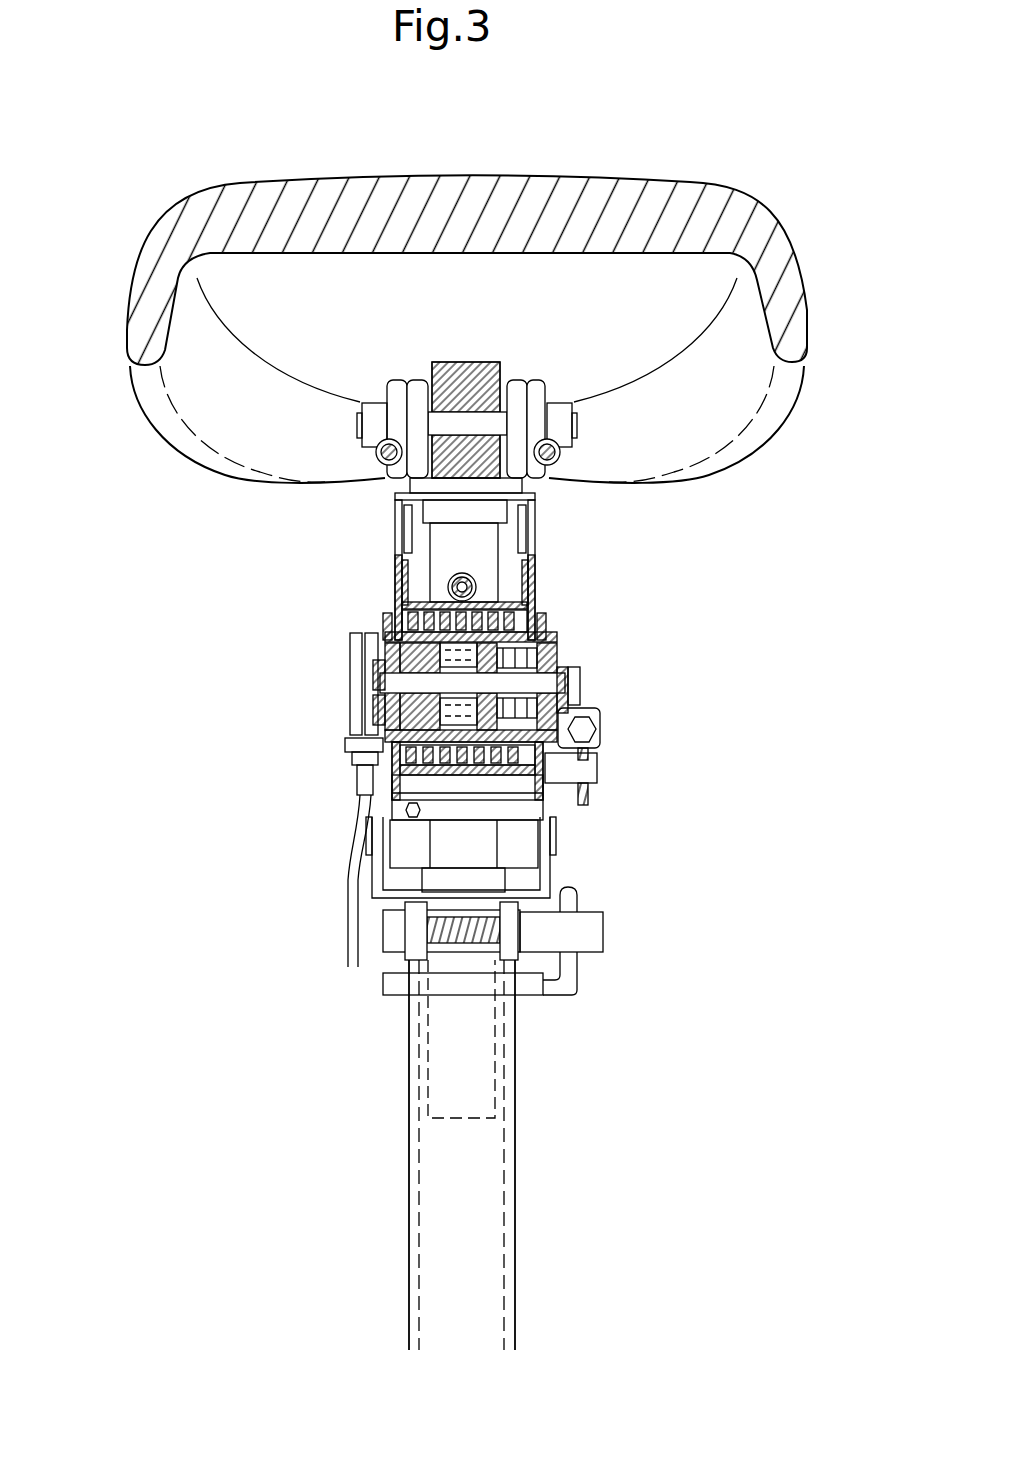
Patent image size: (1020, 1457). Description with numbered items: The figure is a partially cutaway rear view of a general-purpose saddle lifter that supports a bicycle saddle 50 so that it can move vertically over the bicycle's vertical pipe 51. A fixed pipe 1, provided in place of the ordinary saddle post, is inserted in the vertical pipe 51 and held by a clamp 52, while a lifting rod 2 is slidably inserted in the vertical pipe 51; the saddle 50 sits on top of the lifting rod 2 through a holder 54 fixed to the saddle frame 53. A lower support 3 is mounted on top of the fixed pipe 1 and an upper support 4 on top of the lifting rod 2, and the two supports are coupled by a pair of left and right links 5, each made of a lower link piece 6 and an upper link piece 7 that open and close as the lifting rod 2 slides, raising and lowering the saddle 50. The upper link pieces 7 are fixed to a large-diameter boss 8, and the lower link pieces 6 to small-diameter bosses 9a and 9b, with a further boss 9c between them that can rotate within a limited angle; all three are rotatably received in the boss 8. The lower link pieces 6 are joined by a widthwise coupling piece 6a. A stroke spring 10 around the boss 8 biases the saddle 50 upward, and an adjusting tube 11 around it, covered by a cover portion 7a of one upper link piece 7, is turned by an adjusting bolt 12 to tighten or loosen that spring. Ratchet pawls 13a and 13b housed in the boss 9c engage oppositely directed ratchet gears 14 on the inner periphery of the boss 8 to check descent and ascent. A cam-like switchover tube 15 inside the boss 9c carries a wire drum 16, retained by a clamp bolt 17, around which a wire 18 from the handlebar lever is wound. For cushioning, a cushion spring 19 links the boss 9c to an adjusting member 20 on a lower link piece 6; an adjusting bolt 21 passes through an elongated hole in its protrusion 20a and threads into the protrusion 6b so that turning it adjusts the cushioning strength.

The fixed pipe 1 is at (468, 1188).
The lifting rod 2 is at (445, 540).
The lower support 3 is at (553, 870).
The upper support 4 is at (530, 503).
The link 5 is at (378, 622).
The lower link piece 6 is at (387, 807).
The coupling piece 6a is at (455, 810).
The protrusion 6b is at (593, 777).
The upper link piece 7 is at (398, 582).
The cover portion 7a is at (478, 808).
The large-diameter boss 8 is at (537, 627).
The small-diameter boss 9a is at (362, 733).
The small-diameter boss 9b is at (563, 643).
The small-diameter boss 9c is at (367, 682).
The stroke spring 10 is at (517, 605).
The adjusting tube 11 is at (405, 603).
The adjusting bolt 12 is at (452, 580).
The ratchet pawl 13a is at (352, 648).
The ratchet pawl 13b is at (362, 748).
The ratchet gear 14 is at (380, 763).
The switchover tube 15 is at (362, 707).
The wire drum 16 is at (355, 717).
The clamp bolt 17 is at (573, 680).
The wire 18 is at (352, 917).
The cushion spring 19 is at (580, 688).
The adjusting member 20 is at (593, 717).
The protrusion 20a is at (602, 722).
The adjusting bolt 21 is at (592, 762).
The saddle 50 is at (473, 190).
The vertical pipe 51 is at (430, 1258).
The clamp 52 is at (590, 923).
The saddle frame 53 is at (377, 463).
The holder 54 is at (518, 393).